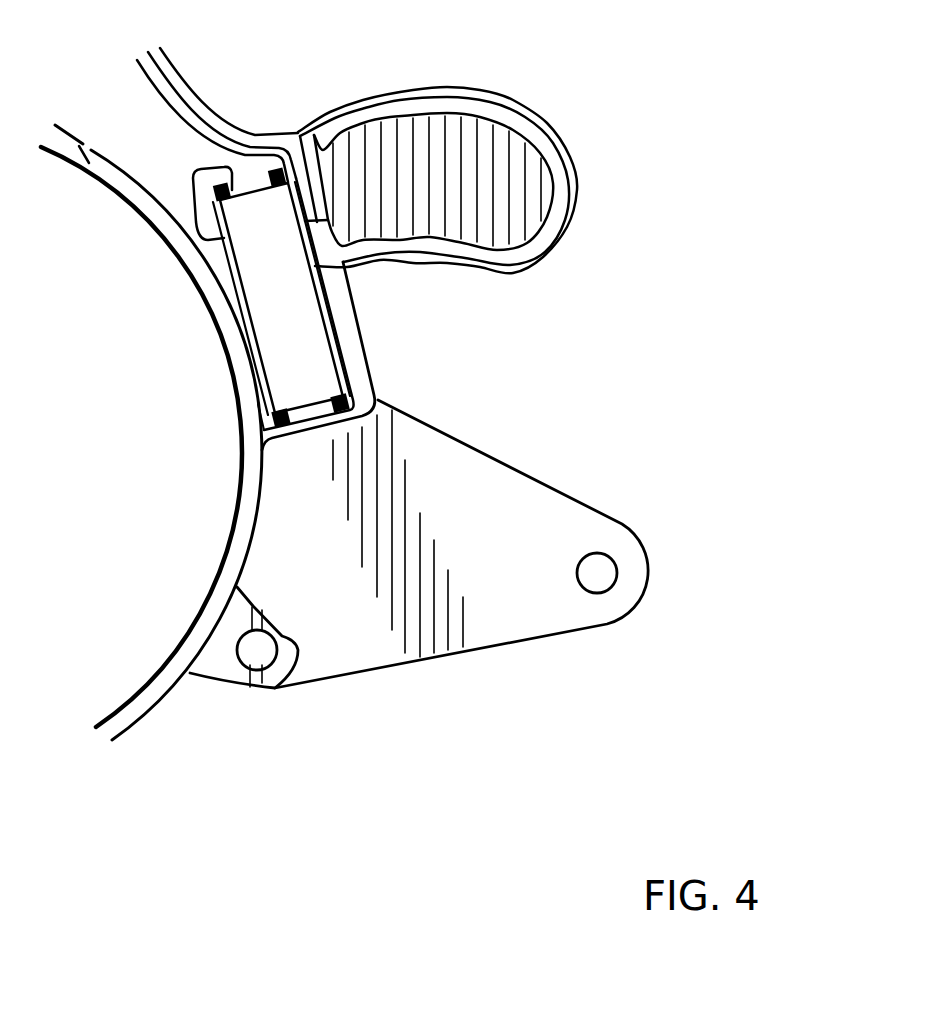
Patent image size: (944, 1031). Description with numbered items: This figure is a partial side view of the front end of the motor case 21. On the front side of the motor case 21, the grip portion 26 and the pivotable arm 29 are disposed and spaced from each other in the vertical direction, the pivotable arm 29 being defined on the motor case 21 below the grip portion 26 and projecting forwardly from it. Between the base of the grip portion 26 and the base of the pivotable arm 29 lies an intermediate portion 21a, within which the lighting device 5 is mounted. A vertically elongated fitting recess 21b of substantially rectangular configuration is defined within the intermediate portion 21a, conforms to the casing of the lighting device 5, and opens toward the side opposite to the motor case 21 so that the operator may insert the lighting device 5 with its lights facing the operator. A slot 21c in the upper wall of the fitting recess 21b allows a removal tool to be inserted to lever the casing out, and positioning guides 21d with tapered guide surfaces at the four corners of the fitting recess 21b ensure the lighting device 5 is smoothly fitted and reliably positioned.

The lighting device 5 is at (255, 292).
The motor case 21 is at (157, 711).
The intermediate portion 21a is at (353, 350).
The fitting recess 21b is at (277, 342).
The slot 21c is at (248, 177).
The positioning guides 21d is at (217, 194).
The grip portion 26 is at (525, 107).
The pivotable arm 29 is at (488, 512).